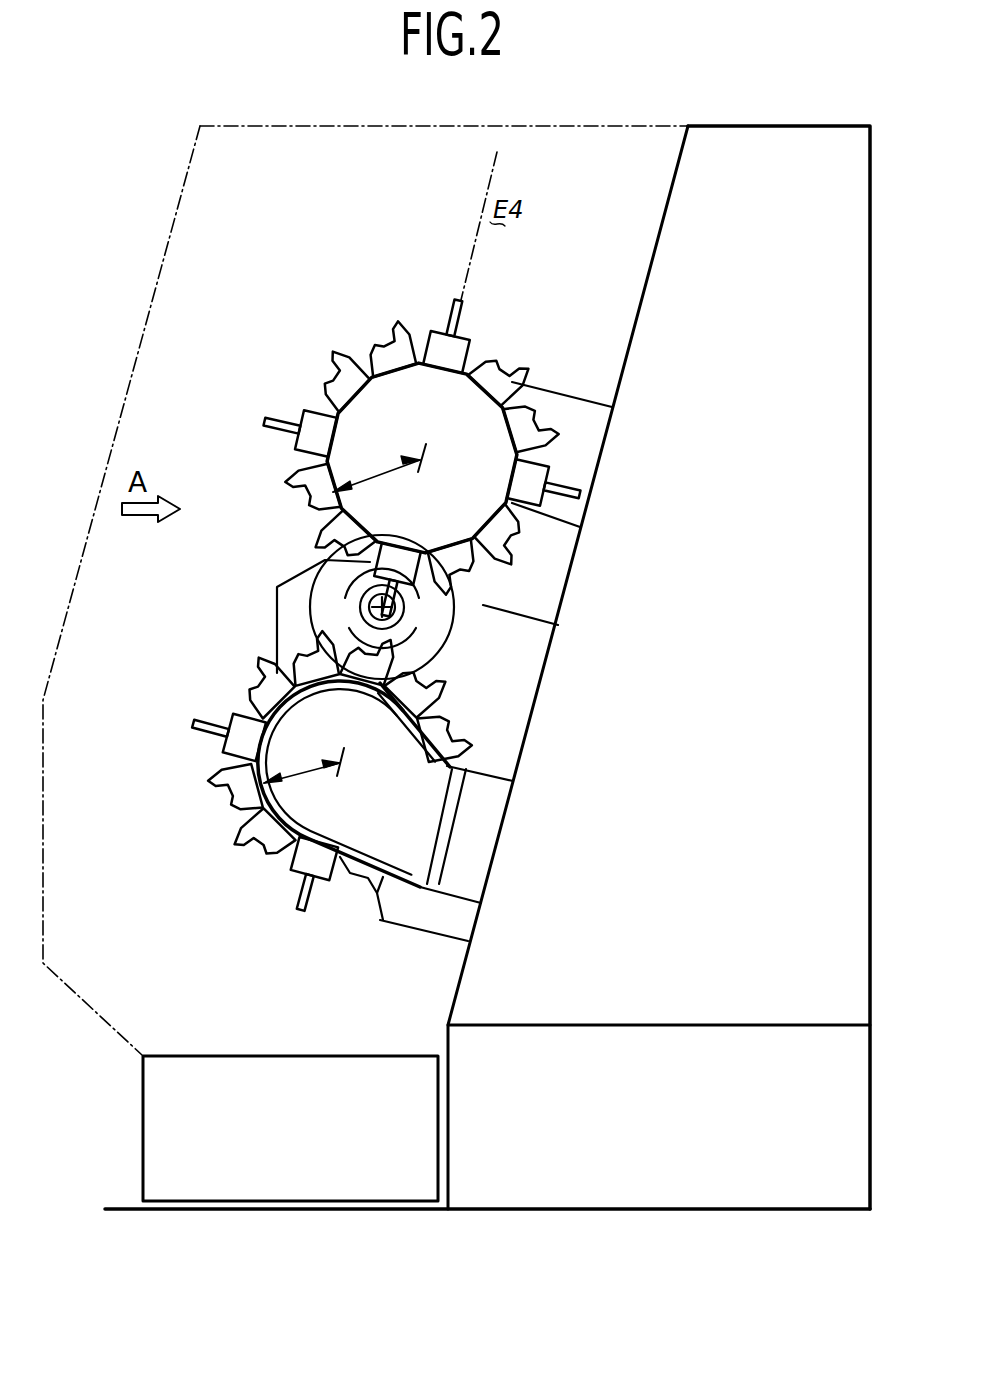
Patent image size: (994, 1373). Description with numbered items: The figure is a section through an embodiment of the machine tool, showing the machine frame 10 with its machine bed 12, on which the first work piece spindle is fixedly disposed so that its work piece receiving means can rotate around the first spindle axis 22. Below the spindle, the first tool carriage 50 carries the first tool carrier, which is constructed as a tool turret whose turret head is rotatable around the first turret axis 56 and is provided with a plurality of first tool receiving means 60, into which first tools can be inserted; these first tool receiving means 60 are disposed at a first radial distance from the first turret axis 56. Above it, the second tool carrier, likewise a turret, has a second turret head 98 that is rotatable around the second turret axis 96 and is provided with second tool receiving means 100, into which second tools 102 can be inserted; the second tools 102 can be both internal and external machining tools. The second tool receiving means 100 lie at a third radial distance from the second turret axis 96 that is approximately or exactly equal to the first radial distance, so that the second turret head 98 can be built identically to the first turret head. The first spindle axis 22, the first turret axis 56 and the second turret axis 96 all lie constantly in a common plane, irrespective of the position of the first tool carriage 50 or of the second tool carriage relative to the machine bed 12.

The machine frame 10 is at (783, 117).
The machine bed 12 is at (757, 269).
The first spindle axis 22 is at (310, 603).
The first tool carriage 50 is at (440, 855).
The first turret axis 56 is at (341, 766).
The first tool receiving means 60 is at (282, 845).
The second turret axis 96 is at (424, 459).
The second turret head 98 is at (378, 425).
The second tool receiving means 100 is at (395, 365).
The second tools 102 is at (377, 348).